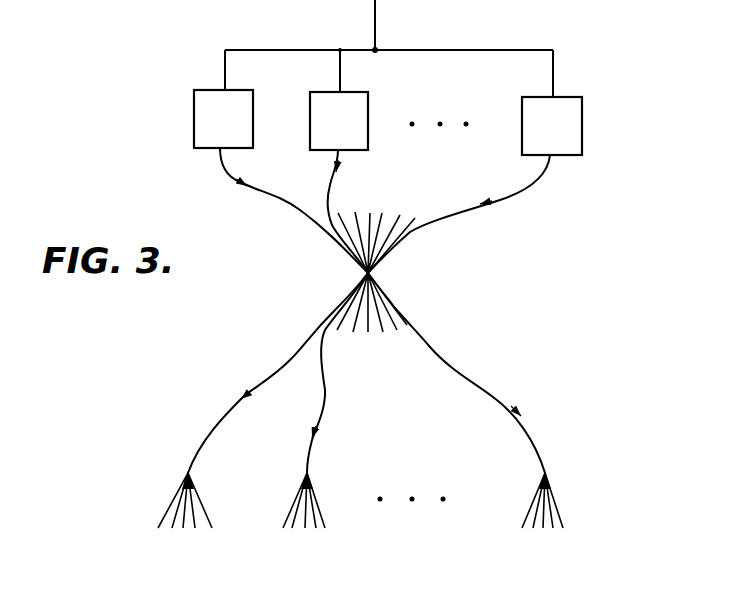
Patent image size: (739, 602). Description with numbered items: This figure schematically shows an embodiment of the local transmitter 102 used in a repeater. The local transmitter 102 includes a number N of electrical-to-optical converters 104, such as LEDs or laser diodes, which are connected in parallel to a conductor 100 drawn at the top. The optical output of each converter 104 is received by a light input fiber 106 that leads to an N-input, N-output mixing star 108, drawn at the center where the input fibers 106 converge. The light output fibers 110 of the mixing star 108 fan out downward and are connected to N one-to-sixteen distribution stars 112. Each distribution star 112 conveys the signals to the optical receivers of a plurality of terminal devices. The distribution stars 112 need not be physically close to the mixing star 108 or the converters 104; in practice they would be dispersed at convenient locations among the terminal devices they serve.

The conductor 100 is at (377, 27).
The local transmitter 102 is at (600, 192).
The electrical-to-optical converters 104 is at (253, 121).
The light input fiber 106 is at (268, 199).
The mixing star 108 is at (412, 275).
The light output fibers 110 is at (210, 425).
The distribution stars 112 is at (209, 473).